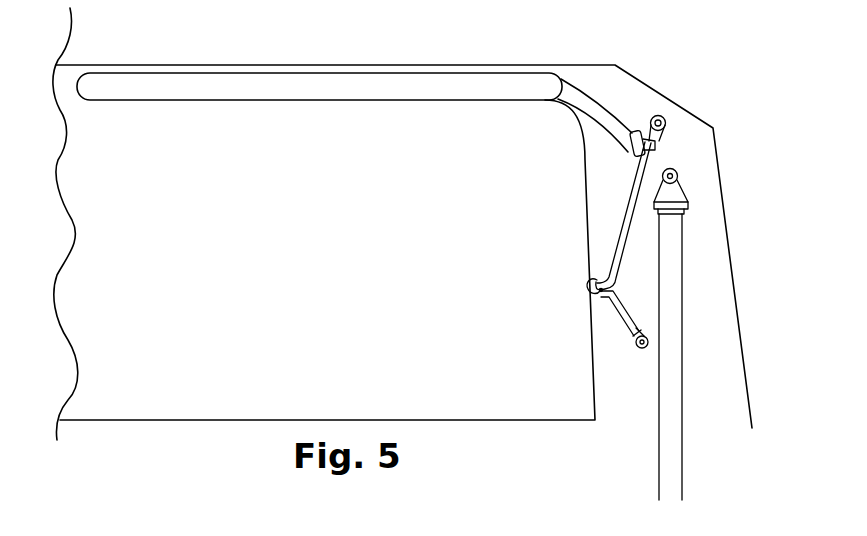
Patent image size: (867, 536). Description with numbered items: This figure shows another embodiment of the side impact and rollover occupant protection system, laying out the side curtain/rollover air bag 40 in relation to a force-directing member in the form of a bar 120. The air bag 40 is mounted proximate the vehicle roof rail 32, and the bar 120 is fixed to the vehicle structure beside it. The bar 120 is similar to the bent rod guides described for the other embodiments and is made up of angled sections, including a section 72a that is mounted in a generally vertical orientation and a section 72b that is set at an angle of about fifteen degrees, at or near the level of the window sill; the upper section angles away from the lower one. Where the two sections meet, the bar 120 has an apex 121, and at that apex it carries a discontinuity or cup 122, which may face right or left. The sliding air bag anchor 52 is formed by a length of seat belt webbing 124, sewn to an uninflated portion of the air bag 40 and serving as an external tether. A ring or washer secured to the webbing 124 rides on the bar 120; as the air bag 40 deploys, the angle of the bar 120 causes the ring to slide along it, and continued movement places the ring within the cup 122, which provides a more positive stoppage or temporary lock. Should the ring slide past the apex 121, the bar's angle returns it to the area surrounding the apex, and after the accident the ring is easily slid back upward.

The roof rail 32 is at (237, 65).
The side curtain/rollover air bag 40 is at (277, 110).
The webbing 124 is at (587, 108).
The sliding air bag anchor 52 is at (640, 130).
The section 72a of rod 72a is at (636, 198).
The bar 120 is at (614, 235).
The discontinuity or cup 122 is at (587, 284).
The apex 121 is at (602, 296).
The section 72b of rod 72b is at (614, 312).